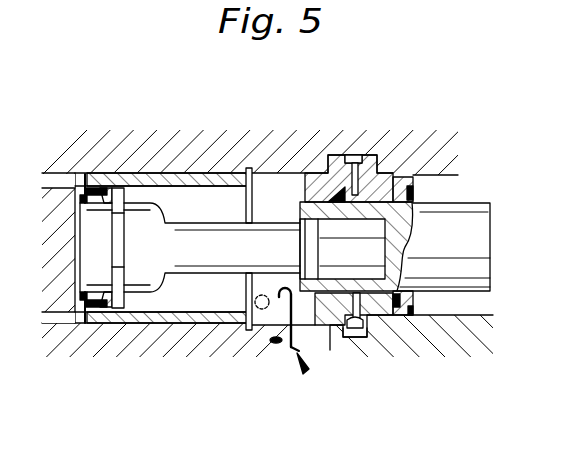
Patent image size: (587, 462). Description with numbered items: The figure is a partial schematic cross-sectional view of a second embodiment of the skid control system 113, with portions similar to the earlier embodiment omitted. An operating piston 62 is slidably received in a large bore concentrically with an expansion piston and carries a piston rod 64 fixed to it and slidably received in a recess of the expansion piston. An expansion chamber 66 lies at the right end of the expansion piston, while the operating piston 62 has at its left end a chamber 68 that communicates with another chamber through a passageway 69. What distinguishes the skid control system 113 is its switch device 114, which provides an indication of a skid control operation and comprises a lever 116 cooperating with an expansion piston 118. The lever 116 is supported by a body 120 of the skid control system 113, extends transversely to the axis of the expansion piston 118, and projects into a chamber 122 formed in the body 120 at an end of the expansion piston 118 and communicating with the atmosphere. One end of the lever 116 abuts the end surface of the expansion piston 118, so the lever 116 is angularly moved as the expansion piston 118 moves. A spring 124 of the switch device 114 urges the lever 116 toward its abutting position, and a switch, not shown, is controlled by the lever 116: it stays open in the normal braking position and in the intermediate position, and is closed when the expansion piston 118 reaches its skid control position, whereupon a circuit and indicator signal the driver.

The operating piston 62 is at (117, 314).
The piston rod 64 is at (191, 268).
The expansion chamber 66 is at (450, 306).
The chamber 68 is at (84, 180).
The passageway 69 is at (62, 180).
The skid control system 113 is at (248, 155).
The switch device 114 is at (305, 372).
The lever 116 is at (290, 293).
The expansion piston 118 is at (490, 243).
The body 120 is at (357, 351).
The chamber 122 is at (288, 200).
The spring 124 is at (278, 340).